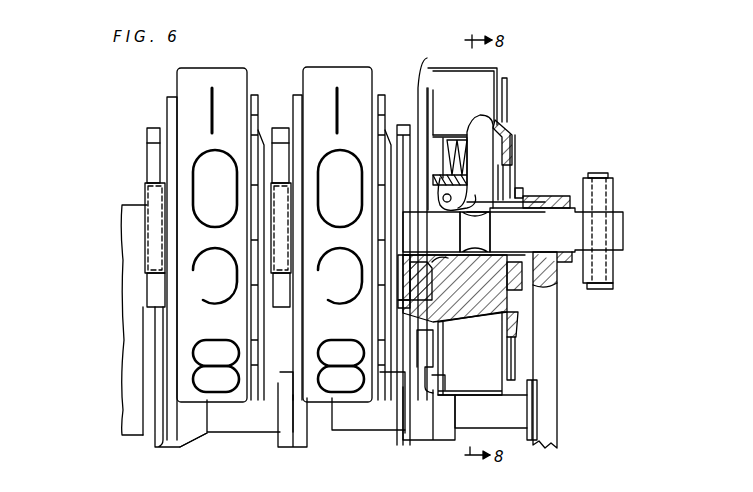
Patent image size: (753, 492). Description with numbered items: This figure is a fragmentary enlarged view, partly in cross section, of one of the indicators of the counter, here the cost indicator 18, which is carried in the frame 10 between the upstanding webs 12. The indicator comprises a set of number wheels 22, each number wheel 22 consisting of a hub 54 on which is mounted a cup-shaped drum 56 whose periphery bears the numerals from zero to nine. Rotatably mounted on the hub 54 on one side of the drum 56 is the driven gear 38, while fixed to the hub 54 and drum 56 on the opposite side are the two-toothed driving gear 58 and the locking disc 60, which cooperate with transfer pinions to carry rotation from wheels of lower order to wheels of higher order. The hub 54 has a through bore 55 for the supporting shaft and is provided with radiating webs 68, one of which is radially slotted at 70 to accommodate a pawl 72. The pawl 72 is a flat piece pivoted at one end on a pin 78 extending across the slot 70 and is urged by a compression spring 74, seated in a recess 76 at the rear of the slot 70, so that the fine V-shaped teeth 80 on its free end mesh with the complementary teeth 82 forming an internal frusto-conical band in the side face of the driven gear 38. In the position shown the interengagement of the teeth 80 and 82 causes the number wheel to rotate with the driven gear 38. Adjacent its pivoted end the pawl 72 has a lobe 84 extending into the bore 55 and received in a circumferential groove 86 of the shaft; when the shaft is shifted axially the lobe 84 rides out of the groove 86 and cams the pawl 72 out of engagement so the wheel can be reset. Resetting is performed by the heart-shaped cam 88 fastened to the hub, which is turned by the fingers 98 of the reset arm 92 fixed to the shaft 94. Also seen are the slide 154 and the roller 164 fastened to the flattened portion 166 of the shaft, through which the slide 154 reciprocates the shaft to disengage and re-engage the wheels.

The frame 10 is at (556, 400).
The upstanding web 12 is at (550, 350).
The cost indicator 18 is at (321, 63).
The number wheel 22 is at (175, 72).
The driven gear 38 is at (253, 95).
The hub 54 is at (500, 298).
The through bore 55 is at (424, 256).
The cup-shaped drum 56 is at (470, 395).
The two-toothed driving gear 58 is at (293, 372).
The locking disc 60 is at (172, 97).
The radiating web 68 is at (445, 140).
The radial slot 70 is at (513, 150).
The pawl 72 is at (487, 175).
The compression spring 74 is at (445, 152).
The recess 76 is at (431, 232).
The pin 78 is at (451, 197).
The serrations or teeth 80 is at (498, 124).
The teeth 82 is at (512, 130).
The lobe 84 is at (476, 218).
The circumferential groove 86 is at (490, 247).
The heart-shaped cam 88 is at (162, 252).
The reset arm 92 is at (165, 333).
The shaft 94 is at (218, 427).
The finger 98 is at (147, 138).
The slide 154 is at (614, 283).
The roller 164 is at (614, 205).
The flattened portion 166 is at (620, 220).